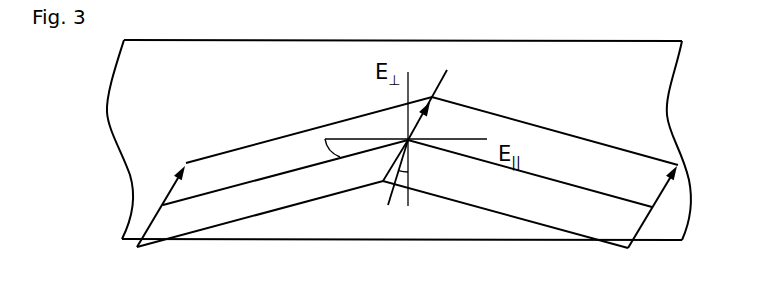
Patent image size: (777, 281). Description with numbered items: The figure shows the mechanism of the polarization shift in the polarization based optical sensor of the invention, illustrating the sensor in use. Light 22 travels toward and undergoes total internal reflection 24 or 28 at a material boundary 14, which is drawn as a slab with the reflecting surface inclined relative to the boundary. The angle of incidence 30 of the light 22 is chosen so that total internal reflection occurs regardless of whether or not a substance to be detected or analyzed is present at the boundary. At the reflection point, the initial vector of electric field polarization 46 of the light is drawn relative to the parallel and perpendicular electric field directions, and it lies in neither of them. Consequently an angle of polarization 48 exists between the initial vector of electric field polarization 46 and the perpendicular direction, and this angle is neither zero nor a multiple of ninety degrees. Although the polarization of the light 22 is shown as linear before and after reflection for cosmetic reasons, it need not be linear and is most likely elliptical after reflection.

The material boundary 14 is at (668, 130).
The light 22 is at (272, 181).
The total internal reflection 24 is at (407, 147).
The total internal reflection 28 is at (400, 133).
The angle of incidence 30 is at (326, 147).
The initial vector of electric field polarization 46 is at (441, 99).
The angle of polarization 48 is at (392, 188).